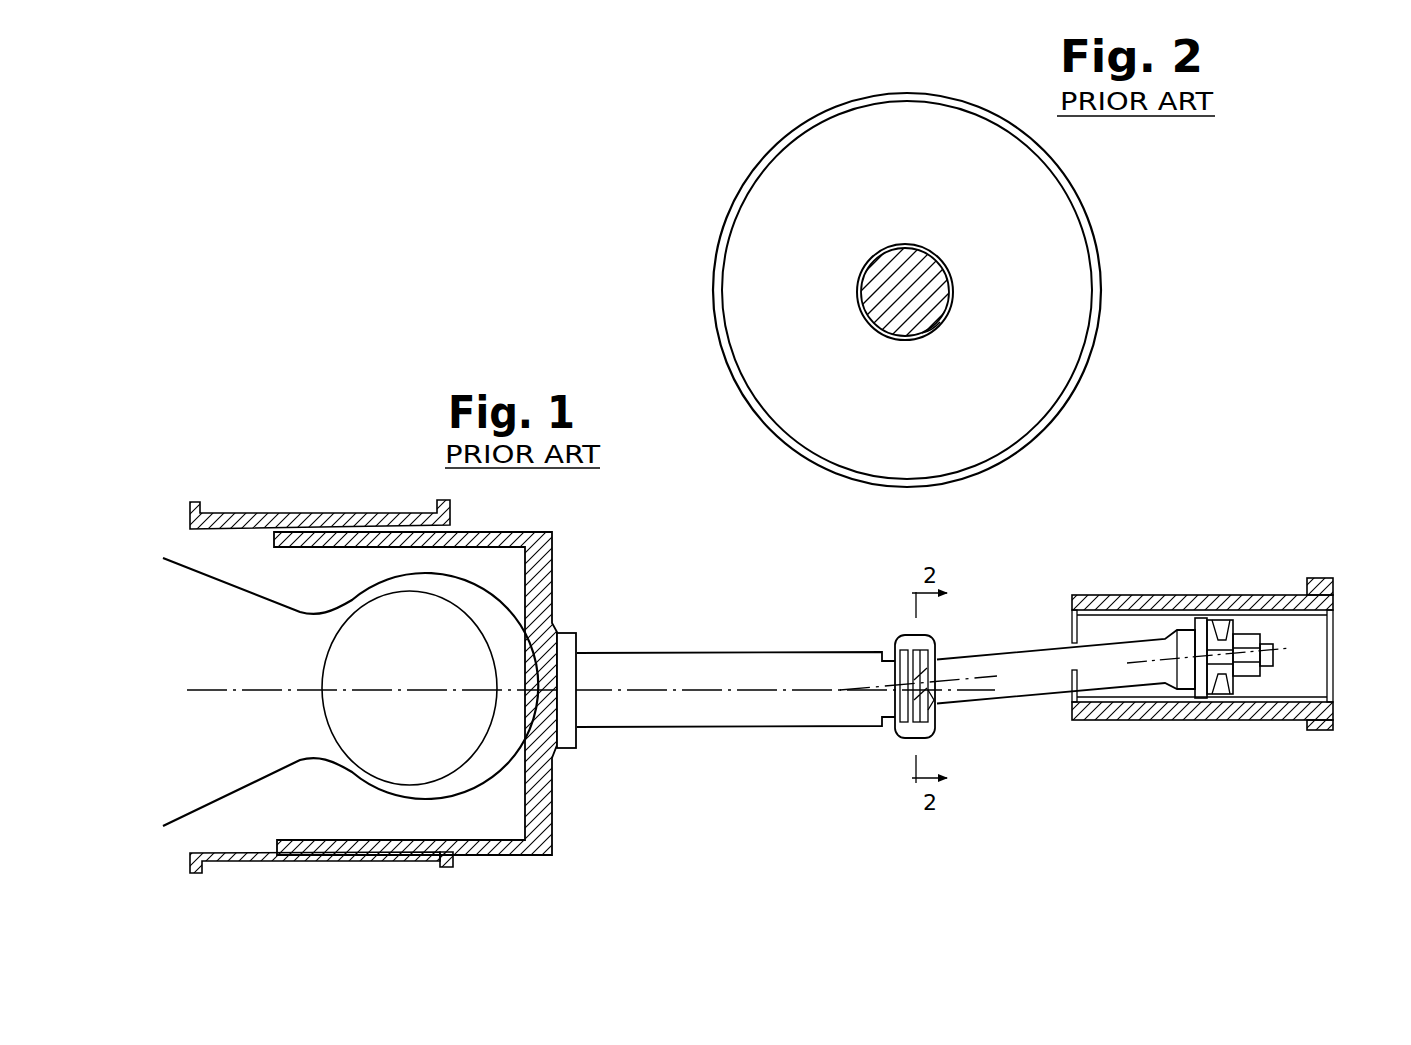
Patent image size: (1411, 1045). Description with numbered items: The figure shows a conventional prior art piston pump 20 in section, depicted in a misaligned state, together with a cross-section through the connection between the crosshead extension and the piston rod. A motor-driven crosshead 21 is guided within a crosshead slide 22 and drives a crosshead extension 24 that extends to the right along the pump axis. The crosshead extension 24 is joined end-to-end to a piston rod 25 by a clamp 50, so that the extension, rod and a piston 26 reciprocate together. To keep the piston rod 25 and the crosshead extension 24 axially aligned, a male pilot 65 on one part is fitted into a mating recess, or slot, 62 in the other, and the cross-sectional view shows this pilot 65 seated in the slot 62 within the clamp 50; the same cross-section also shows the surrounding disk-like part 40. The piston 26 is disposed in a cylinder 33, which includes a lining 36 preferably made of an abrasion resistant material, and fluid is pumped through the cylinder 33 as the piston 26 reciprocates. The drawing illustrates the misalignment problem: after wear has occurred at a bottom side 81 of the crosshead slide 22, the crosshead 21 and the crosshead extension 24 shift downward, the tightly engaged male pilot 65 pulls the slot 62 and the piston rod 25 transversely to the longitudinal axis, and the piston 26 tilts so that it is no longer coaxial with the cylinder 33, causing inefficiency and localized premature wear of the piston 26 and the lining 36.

In FIG. 1, the piston pump 20 is at (762, 600).
In FIG. 1, the crosshead 21 is at (490, 532).
In FIG. 1, the crosshead slide 22 is at (355, 513).
In FIG. 1, the crosshead extension 24 is at (652, 662).
In FIG. 2, the crosshead extension 24 is at (908, 292).
In FIG. 1, the piston rod 25 is at (1018, 660).
In FIG. 2, the piston rod 25 is at (773, 147).
In FIG. 1, the piston 26 is at (1280, 632).
In FIG. 1, the cylinder 33 is at (1167, 595).
In FIG. 1, the lining 36 is at (1260, 697).
In FIG. 1, the disk 40 is at (935, 658).
In FIG. 2, the disk 40 is at (745, 272).
In FIG. 1, the clamp 50 is at (900, 645).
In FIG. 1, the mating recess 62 is at (940, 703).
In FIG. 2, the mating recess 62 is at (945, 320).
In FIG. 1, the male pilot 65 is at (897, 688).
In FIG. 2, the male pilot 65 is at (932, 280).
In FIG. 1, the bottom side 81 is at (413, 858).